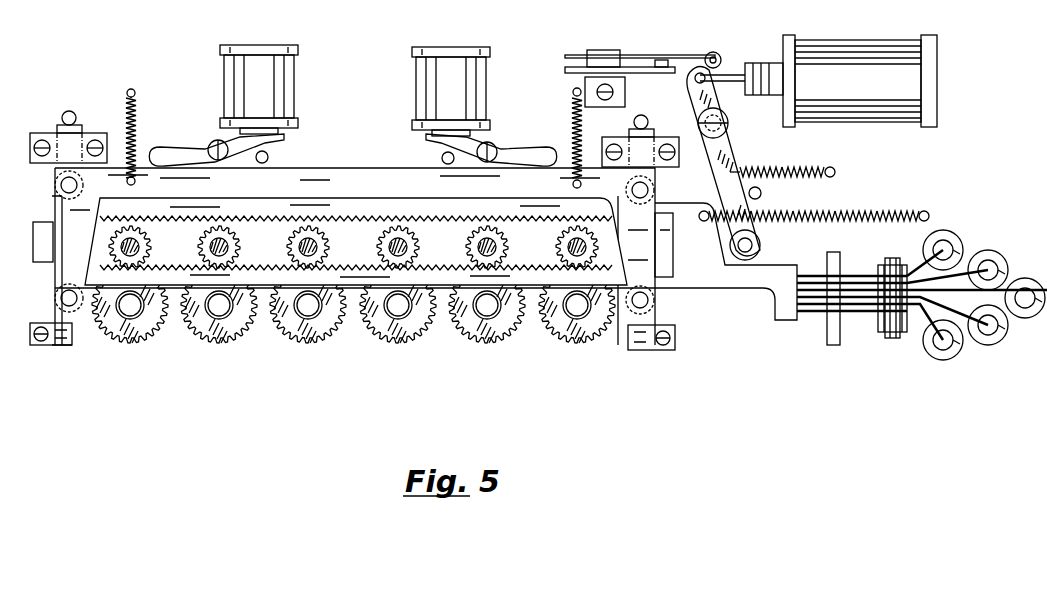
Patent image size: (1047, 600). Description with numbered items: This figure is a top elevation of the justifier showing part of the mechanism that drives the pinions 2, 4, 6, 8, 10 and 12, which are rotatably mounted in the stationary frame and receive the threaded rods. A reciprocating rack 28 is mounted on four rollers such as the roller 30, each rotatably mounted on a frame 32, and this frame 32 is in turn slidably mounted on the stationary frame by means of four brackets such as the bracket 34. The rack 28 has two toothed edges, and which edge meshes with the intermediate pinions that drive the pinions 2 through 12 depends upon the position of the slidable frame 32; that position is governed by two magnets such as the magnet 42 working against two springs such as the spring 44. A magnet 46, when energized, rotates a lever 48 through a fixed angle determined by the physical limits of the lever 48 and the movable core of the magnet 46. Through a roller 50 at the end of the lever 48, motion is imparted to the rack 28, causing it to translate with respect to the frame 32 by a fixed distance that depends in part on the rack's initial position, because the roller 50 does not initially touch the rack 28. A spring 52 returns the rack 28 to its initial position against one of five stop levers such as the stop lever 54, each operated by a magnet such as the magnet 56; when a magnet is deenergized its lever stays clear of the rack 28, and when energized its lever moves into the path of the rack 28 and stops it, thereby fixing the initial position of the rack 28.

The pinion 2 is at (140, 335).
The pinion 4 is at (216, 336).
The pinion 6 is at (304, 336).
The pinion 8 is at (394, 336).
The pinion 10 is at (484, 336).
The pinion 12 is at (574, 336).
The reciprocating rack 28 is at (348, 212).
The roller 30 is at (56, 293).
The frame 32 is at (302, 182).
The bracket 34 is at (56, 326).
The magnet 42 is at (428, 76).
The spring 44 is at (571, 119).
The magnet 46 is at (879, 110).
The lever 48 is at (727, 153).
The roller 50 is at (762, 246).
The spring 52 is at (822, 218).
The stop lever 54 is at (800, 278).
The magnet 56 is at (950, 244).